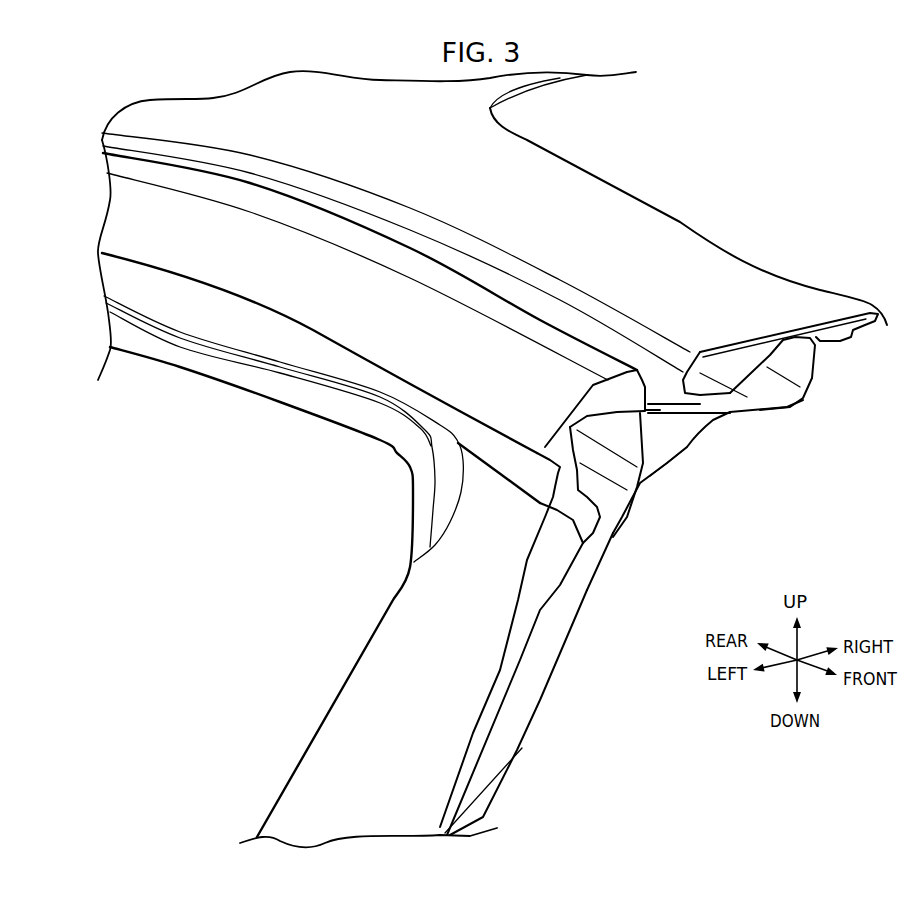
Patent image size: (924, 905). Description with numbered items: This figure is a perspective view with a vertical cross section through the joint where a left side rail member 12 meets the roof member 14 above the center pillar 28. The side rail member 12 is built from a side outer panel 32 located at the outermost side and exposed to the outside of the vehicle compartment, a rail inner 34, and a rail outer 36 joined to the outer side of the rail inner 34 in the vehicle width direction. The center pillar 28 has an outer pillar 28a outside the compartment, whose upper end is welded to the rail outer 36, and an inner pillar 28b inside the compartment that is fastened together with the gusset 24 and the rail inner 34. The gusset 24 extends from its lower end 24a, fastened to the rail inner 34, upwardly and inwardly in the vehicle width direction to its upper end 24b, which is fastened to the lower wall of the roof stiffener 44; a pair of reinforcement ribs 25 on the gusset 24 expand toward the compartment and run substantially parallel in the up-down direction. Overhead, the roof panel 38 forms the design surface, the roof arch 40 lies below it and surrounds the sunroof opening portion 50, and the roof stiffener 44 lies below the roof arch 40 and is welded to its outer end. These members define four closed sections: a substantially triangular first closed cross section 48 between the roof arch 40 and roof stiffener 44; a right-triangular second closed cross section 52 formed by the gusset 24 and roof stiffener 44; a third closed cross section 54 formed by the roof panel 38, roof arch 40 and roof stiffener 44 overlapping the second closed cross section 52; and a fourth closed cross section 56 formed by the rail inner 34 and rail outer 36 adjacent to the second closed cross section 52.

The side rail member 12 is at (272, 293).
The roof member 14 is at (685, 219).
The gusset 24 is at (692, 455).
The lower end of the gusset 24a is at (620, 535).
The upper end of the gusset 24b is at (767, 415).
The reinforcement ribs 25 is at (668, 447).
The center pillar 28 is at (528, 752).
The outer pillar 28a is at (513, 690).
The inner pillar 28b is at (540, 703).
The side outer panel 32 is at (387, 343).
The rail inner 34 is at (648, 455).
The rail outer 36 is at (577, 414).
The roof panel 38 is at (820, 327).
The roof arch 40 is at (788, 352).
The roof stiffener 44 is at (808, 391).
The first closed cross section 48 is at (773, 387).
The sunroof opening portion 50 is at (670, 169).
The second closed cross section 52 is at (653, 447).
The third closed cross section 54 is at (717, 381).
The fourth closed cross section 56 is at (637, 447).